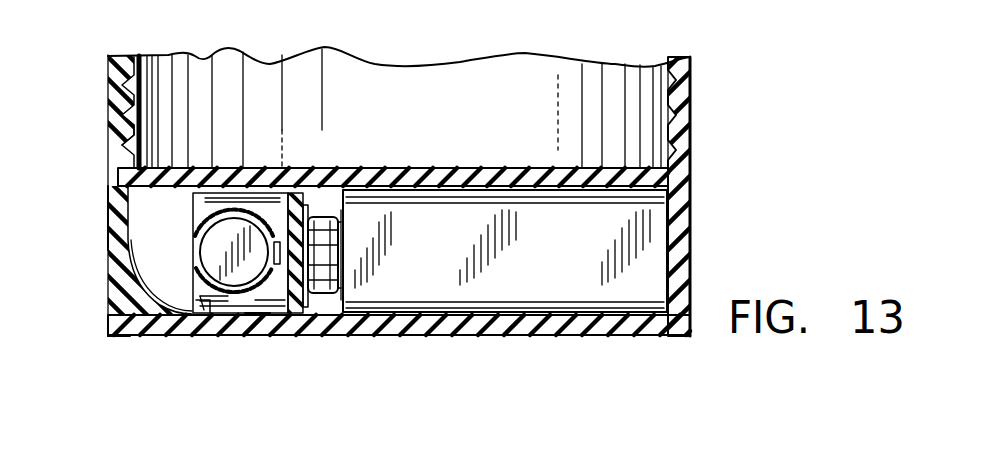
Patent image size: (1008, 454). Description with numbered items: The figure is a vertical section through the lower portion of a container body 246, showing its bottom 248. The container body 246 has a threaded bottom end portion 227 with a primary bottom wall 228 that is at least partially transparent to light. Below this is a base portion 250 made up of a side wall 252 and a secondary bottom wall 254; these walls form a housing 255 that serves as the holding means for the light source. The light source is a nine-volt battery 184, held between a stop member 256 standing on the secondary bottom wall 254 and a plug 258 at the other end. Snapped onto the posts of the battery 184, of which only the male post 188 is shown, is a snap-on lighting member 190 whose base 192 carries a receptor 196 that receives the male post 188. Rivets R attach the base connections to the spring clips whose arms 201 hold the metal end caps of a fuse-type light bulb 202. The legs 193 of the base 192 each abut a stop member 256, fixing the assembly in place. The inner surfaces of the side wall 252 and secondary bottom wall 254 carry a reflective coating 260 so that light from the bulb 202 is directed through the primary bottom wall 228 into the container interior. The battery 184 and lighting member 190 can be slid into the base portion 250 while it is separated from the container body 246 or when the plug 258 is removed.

The container body 246 is at (468, 58).
The threaded bottom end portion 227 is at (114, 86).
The bottom 248 is at (102, 151).
The primary bottom wall 228 is at (472, 168).
The secondary bottom wall 254 is at (580, 326).
The plug 258 is at (692, 195).
The side wall 252 is at (120, 248).
The base portion 250 is at (102, 223).
The housing 255 is at (150, 269).
The reflective coating 260 is at (115, 328).
The stop member 256 is at (171, 334).
The light bulb 202 is at (212, 242).
The snap-on lighting member 190 is at (292, 202).
The arms 201 is at (240, 212).
The legs 193 is at (199, 300).
The rivets R is at (257, 334).
The base 192 is at (308, 292).
The receptor 196 is at (300, 292).
The male post 188 is at (343, 248).
The battery 184 is at (581, 266).